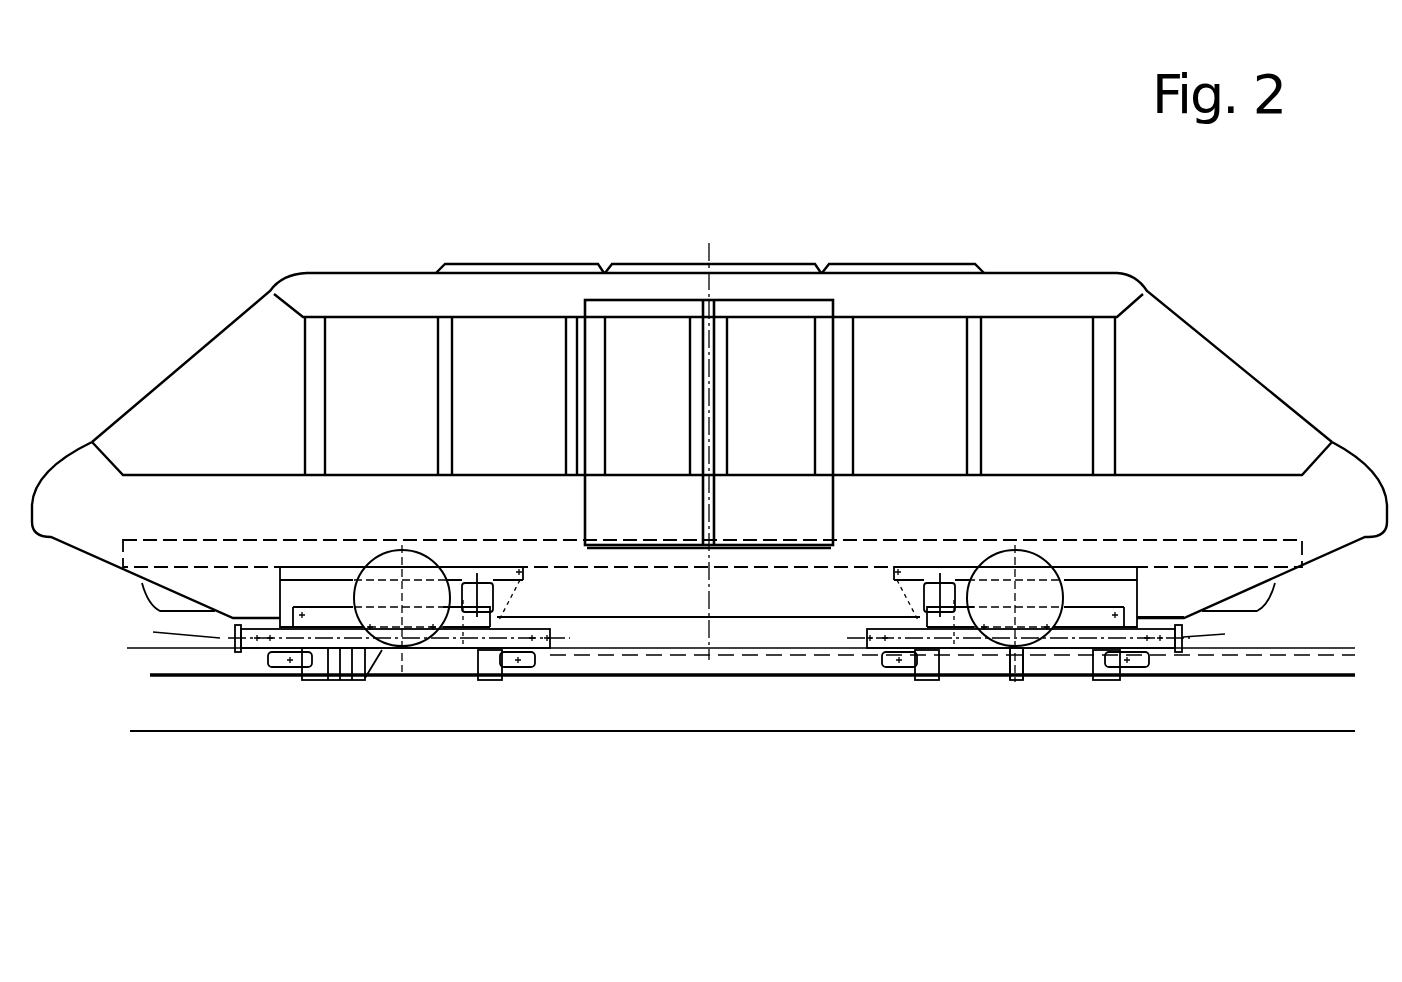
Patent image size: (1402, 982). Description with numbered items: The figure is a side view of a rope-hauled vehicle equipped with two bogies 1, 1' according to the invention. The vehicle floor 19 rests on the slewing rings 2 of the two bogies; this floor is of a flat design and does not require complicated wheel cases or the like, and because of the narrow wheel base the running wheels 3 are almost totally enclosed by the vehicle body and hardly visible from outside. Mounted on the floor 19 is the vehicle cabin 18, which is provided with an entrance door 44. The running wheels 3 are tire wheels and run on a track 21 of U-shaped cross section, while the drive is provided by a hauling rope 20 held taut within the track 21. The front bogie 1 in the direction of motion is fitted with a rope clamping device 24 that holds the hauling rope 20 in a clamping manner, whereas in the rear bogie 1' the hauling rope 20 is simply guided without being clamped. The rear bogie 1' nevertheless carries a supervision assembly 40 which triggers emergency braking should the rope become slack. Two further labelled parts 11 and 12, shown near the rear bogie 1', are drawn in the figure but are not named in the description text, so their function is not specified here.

The front bogie 1 is at (361, 711).
The rear bogie 1' is at (1024, 699).
The slewing ring 2 is at (325, 573).
The running wheel 3 is at (390, 553).
The support element 11 is at (1138, 672).
The support element 12 is at (890, 667).
The vehicle cabin 18 is at (438, 287).
The floor 19 is at (732, 562).
The hauling rope 20 is at (568, 678).
The track 21 is at (1220, 710).
The rope clamping device 24 is at (355, 716).
The supervision assembly 40 is at (991, 711).
The entrance door 44 is at (783, 337).